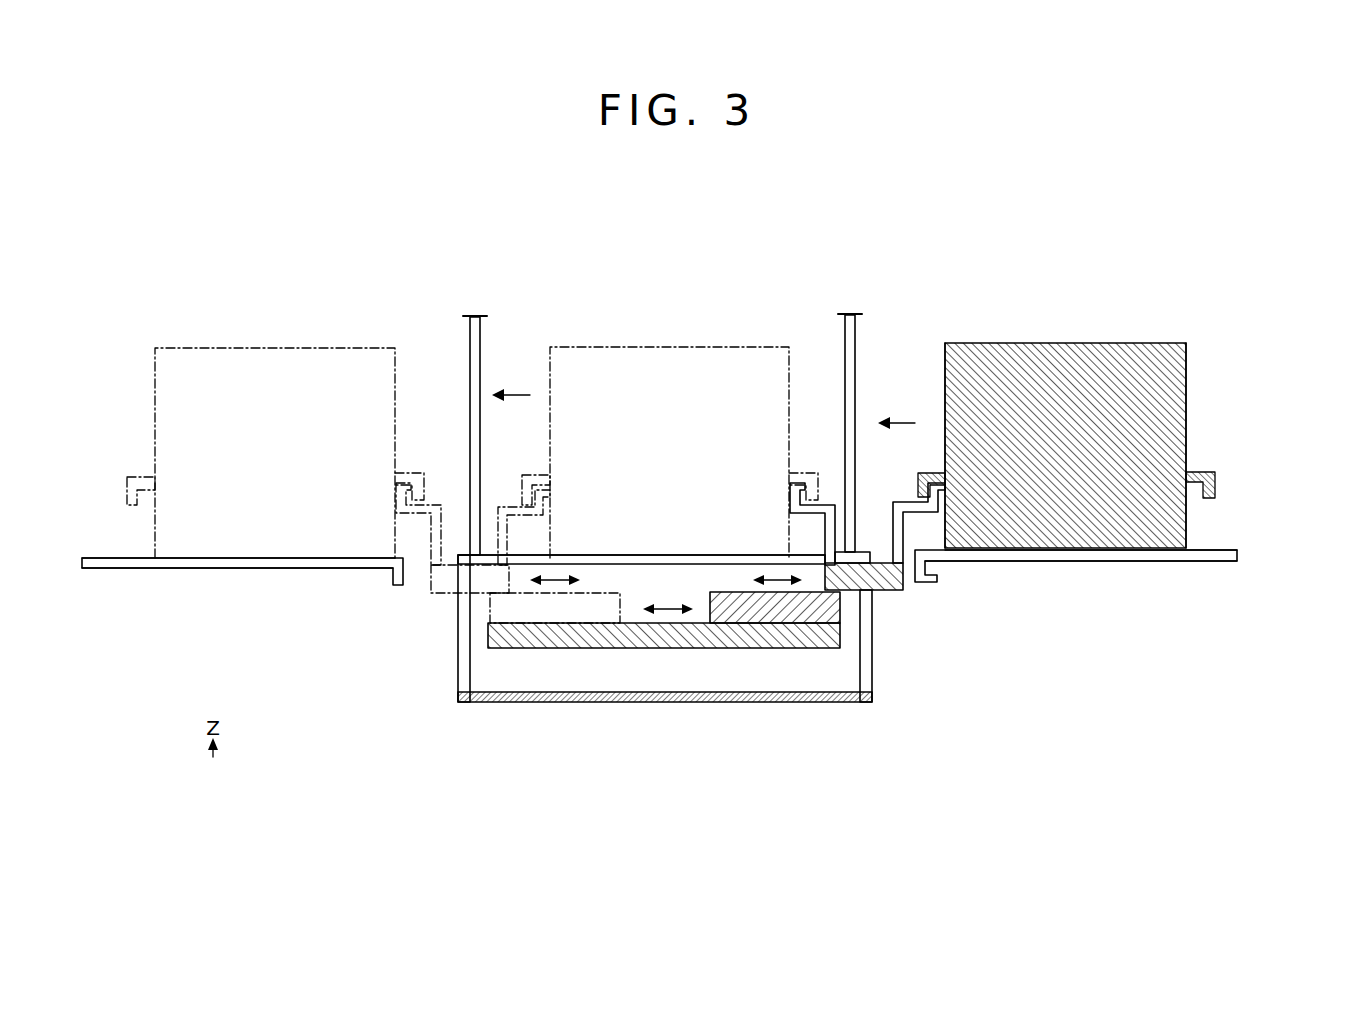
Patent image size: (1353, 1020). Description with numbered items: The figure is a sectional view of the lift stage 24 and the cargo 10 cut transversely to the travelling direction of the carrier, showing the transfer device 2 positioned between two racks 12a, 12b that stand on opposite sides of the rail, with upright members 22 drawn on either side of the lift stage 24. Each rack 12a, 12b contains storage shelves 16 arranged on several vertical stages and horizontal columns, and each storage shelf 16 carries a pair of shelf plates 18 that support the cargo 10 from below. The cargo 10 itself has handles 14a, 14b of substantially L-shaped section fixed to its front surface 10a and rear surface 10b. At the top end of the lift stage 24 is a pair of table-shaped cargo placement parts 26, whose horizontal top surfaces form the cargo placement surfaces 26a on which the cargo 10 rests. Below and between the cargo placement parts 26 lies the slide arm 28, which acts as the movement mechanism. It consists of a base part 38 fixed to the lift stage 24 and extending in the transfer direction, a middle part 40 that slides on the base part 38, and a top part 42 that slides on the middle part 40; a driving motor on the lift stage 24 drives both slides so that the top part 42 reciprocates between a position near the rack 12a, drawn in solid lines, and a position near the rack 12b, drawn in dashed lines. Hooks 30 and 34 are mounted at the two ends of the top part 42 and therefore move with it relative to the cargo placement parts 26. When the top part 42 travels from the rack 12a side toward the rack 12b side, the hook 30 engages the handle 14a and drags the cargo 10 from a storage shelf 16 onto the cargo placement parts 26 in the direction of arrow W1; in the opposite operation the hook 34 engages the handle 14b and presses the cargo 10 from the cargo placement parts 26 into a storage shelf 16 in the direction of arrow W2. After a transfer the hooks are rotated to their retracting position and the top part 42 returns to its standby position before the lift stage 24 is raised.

The transfer device 2 is at (665, 656).
The cargo 10 is at (290, 348).
The front surface 10a is at (945, 367).
The rear surface 10b is at (1187, 365).
The rack 12a is at (1244, 556).
The rack 12b is at (130, 556).
The handle 14a is at (130, 477).
The handle 14b is at (400, 473).
The storage shelf 16 is at (178, 556).
The shelf plate 18 is at (215, 568).
The guide post 22 is at (470, 351).
The lift stage 24 is at (806, 703).
The cargo placement part 26 is at (652, 555).
The cargo placement surface 26a is at (594, 555).
The slide arm 28 is at (657, 632).
The hook 30 is at (543, 499).
The hook 34 is at (396, 507).
The base part 38 is at (823, 647).
The middle part 40 is at (835, 610).
The top part 42 is at (887, 590).
The arrow W1 is at (903, 418).
The arrow W2 is at (518, 392).